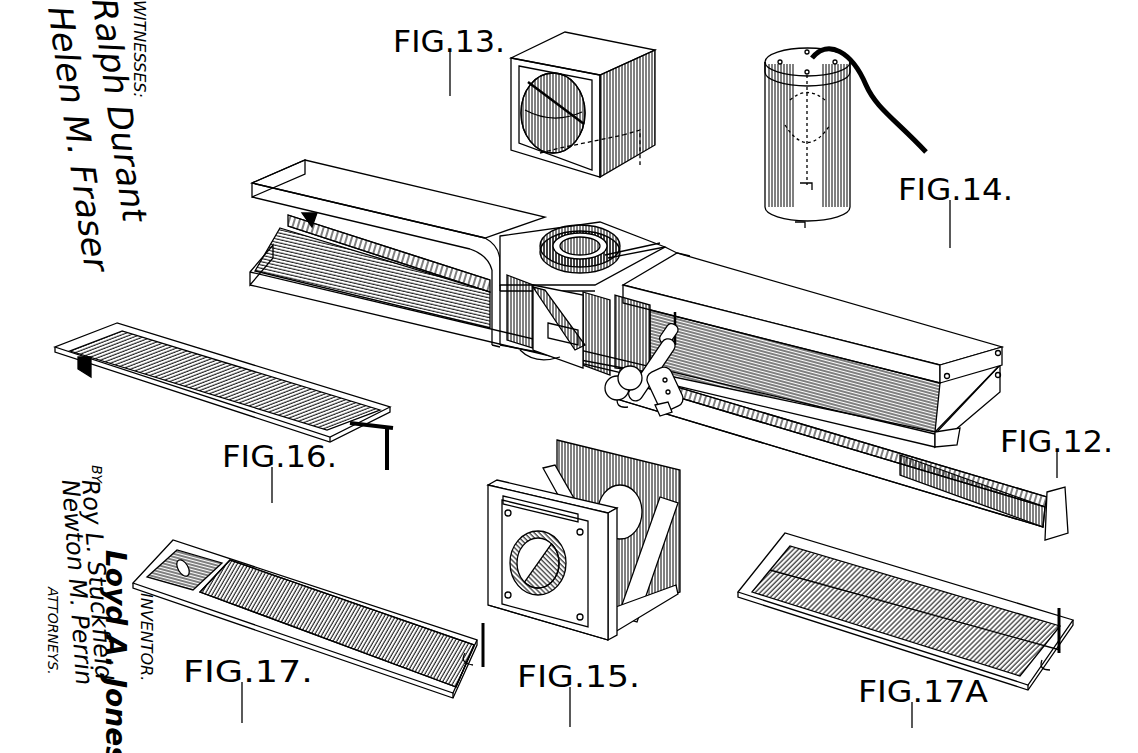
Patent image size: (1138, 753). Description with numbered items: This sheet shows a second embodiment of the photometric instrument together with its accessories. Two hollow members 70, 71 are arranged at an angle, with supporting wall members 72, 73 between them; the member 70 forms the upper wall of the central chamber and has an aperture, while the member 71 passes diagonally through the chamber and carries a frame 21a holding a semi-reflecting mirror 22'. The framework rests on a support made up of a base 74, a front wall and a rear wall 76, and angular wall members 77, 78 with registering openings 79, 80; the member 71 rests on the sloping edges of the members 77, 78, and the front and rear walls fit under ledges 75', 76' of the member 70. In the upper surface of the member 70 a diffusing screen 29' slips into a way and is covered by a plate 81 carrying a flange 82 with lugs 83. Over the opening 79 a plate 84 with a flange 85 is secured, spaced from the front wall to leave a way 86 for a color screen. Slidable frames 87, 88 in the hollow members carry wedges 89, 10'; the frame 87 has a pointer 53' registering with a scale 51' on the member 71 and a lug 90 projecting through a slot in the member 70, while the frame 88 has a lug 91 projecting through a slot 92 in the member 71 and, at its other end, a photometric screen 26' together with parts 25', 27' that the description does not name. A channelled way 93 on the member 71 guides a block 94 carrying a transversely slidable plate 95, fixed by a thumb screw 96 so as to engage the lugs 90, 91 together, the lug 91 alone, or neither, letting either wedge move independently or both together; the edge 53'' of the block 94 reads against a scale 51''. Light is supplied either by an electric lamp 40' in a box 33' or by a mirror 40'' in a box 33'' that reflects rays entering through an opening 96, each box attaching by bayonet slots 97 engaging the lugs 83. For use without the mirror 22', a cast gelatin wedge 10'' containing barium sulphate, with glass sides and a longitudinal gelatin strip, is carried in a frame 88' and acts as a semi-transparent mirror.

In FIG. 12, the hollow member 70 is at (820, 308).
In FIG. 12, the hollow member 71 is at (273, 258).
In FIG. 12, the supporting wall member 72 is at (495, 327).
In FIG. 12, the supporting wall member 73 is at (590, 362).
In FIG. 15, the base 74 is at (640, 622).
In FIG. 15, the ledge 75' is at (548, 631).
In FIG. 12, the ledge 75' is at (582, 256).
In FIG. 15, the rear wall 76 is at (618, 523).
In FIG. 12, the ledge 76' is at (687, 244).
In FIG. 15, the angular wall member 77 is at (562, 484).
In FIG. 15, the angular wall member 78 is at (668, 513).
In FIG. 15, the opening 79 is at (512, 581).
In FIG. 15, the opening 80 is at (620, 512).
In FIG. 12, the plate 81 is at (655, 250).
In FIG. 12, the flange 82 is at (627, 249).
In FIG. 12, the lugs 83 is at (545, 252).
In FIG. 15, the plate 84 is at (567, 612).
In FIG. 15, the flange 85 is at (512, 566).
In FIG. 15, the way 86 is at (500, 497).
In FIG. 16, the slidable frame 87 is at (322, 396).
In FIG. 17, the slidable frame 88 is at (337, 623).
In FIG. 17A, the frame 88' is at (906, 611).
In FIG. 16, the wedge 89 is at (233, 364).
In FIG. 12, the wedge 89 is at (795, 371).
In FIG. 16, the lug 90 is at (386, 440).
In FIG. 12, the lug 90 is at (667, 318).
In FIG. 17, the lug 91 is at (486, 650).
In FIG. 17A, the lug 91 is at (1063, 613).
In FIG. 12, the lug 91 is at (688, 330).
In FIG. 12, the slot 92 is at (957, 441).
In FIG. 12, the channelled way 93 is at (1063, 489).
In FIG. 12, the block 94 is at (670, 404).
In FIG. 12, the transversely slidable plate 95 is at (618, 404).
In FIG. 13, the thumb screw 96 is at (538, 128).
In FIG. 12, the thumb screw 96 is at (636, 383).
In FIG. 13, the bayonet slots 97 is at (572, 160).
In FIG. 14, the bayonet slots 97 is at (835, 182).
In FIG. 14, the electric lamp 40' is at (855, 117).
In FIG. 13, the mirror 40'' is at (532, 113).
In FIG. 14, the box 33' is at (826, 134).
In FIG. 13, the box 33'' is at (601, 104).
In FIG. 16, the pointer 53' is at (96, 375).
In FIG. 12, the pointer 53' is at (287, 216).
In FIG. 12, the edge 53'' is at (678, 425).
In FIG. 12, the scale 51' is at (369, 271).
In FIG. 12, the scale 51'' is at (833, 448).
In FIG. 12, the diffusing screen 29' is at (491, 241).
In FIG. 12, the semi-reflecting mirror 22' is at (561, 326).
In FIG. 12, the frame 21a is at (545, 357).
In FIG. 17, the wedge 10' is at (305, 619).
In FIG. 17A, the cast gelatin wedge 10'' is at (905, 611).
In FIG. 17, the photometric screen 26' is at (180, 559).
In FIG. 17, the aperture 27' is at (193, 550).
In FIG. 17, the screen 25' is at (337, 609).